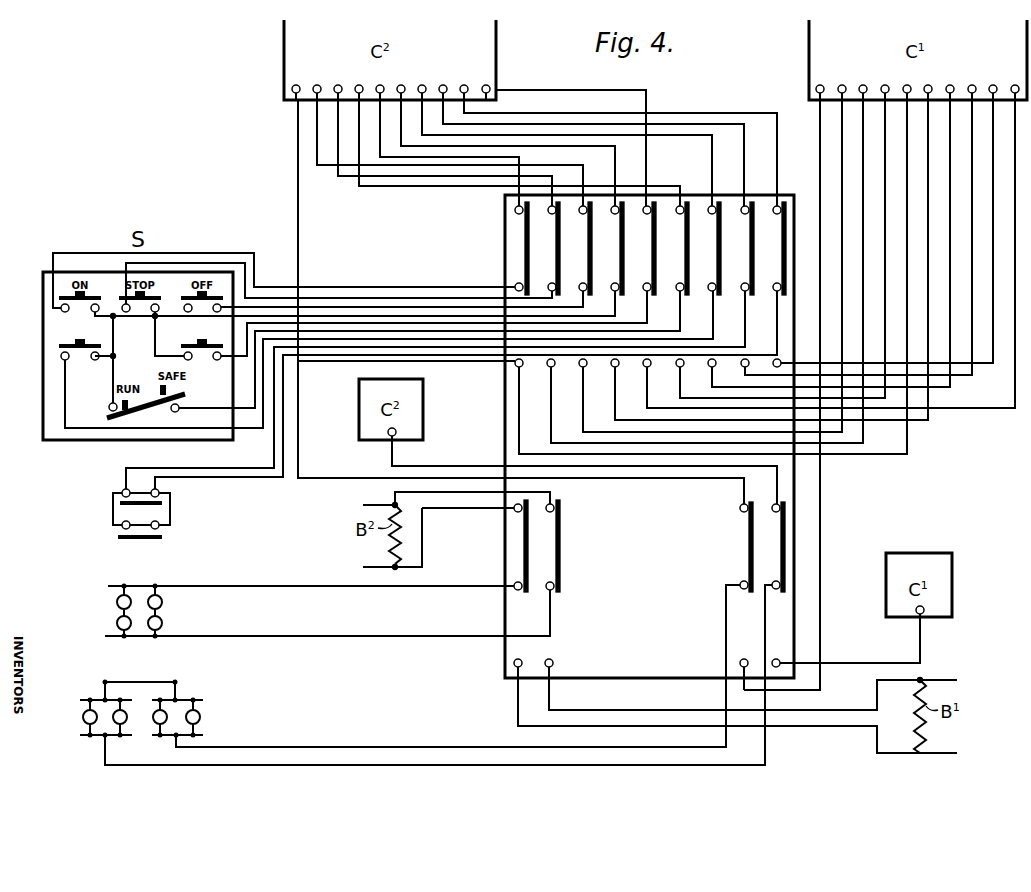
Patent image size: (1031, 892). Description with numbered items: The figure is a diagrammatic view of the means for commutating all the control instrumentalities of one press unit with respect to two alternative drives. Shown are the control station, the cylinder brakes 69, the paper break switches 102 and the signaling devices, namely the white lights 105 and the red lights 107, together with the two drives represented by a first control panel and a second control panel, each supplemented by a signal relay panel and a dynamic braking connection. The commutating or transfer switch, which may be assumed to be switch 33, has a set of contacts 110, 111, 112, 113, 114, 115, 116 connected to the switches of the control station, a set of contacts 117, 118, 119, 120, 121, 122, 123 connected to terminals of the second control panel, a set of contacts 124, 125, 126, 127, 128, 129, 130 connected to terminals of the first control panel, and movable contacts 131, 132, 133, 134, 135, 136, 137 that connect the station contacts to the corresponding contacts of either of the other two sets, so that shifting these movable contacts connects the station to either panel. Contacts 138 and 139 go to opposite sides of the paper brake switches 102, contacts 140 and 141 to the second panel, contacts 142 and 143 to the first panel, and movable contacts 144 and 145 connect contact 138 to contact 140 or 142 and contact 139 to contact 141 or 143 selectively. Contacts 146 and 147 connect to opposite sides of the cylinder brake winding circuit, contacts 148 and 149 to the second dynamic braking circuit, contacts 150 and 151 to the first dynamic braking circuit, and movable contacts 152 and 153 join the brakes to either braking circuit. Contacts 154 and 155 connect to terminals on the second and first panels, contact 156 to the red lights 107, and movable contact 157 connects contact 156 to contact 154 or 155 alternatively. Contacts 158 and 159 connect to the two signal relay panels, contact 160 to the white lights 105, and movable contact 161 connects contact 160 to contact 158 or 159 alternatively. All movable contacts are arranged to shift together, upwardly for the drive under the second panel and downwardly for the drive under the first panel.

The commutating switch 33 is at (505, 243).
The cylinder brakes 69 is at (160, 622).
The paper break switches 102 is at (141, 513).
The white lights 105 is at (83, 720).
The red lights 107 is at (200, 720).
The contact 110 is at (515, 286).
The contact 111 is at (549, 284).
The contact 112 is at (580, 284).
The contact 113 is at (612, 284).
The contact 114 is at (644, 284).
The contact 115 is at (677, 284).
The contact 116 is at (709, 284).
The contact 117 is at (515, 211).
The contact 118 is at (549, 212).
The contact 119 is at (580, 212).
The contact 120 is at (612, 212).
The contact 121 is at (644, 212).
The contact 122 is at (677, 212).
The contact 123 is at (709, 212).
The contact 124 is at (516, 366).
The contact 125 is at (548, 366).
The contact 126 is at (580, 366).
The contact 127 is at (612, 366).
The contact 128 is at (644, 366).
The contact 129 is at (677, 366).
The contact 130 is at (709, 366).
The movable contact 131 is at (529, 262).
The movable contact 132 is at (560, 262).
The movable contact 133 is at (592, 262).
The movable contact 134 is at (624, 262).
The movable contact 135 is at (656, 262).
The movable contact 136 is at (689, 262).
The movable contact 137 is at (721, 262).
The contact 138 is at (742, 284).
The contact 139 is at (774, 284).
The contact 140 is at (742, 212).
The contact 141 is at (774, 212).
The contact 142 is at (742, 366).
The contact 143 is at (773, 363).
The movable contact 144 is at (754, 262).
The movable contact 145 is at (788, 262).
The contact 146 is at (514, 589).
The contact 147 is at (547, 589).
The contact 148 is at (514, 511).
The contact 149 is at (547, 511).
The contact 150 is at (520, 659).
The contact 151 is at (553, 663).
The movable contact 152 is at (528, 567).
The movable contact 153 is at (562, 567).
The contact 154 is at (741, 510).
The contact 155 is at (745, 659).
The contact 156 is at (741, 581).
The movable contact 157 is at (749, 547).
The contact 158 is at (773, 504).
The contact 159 is at (777, 659).
The contact 160 is at (774, 581).
The movable contact 161 is at (781, 546).